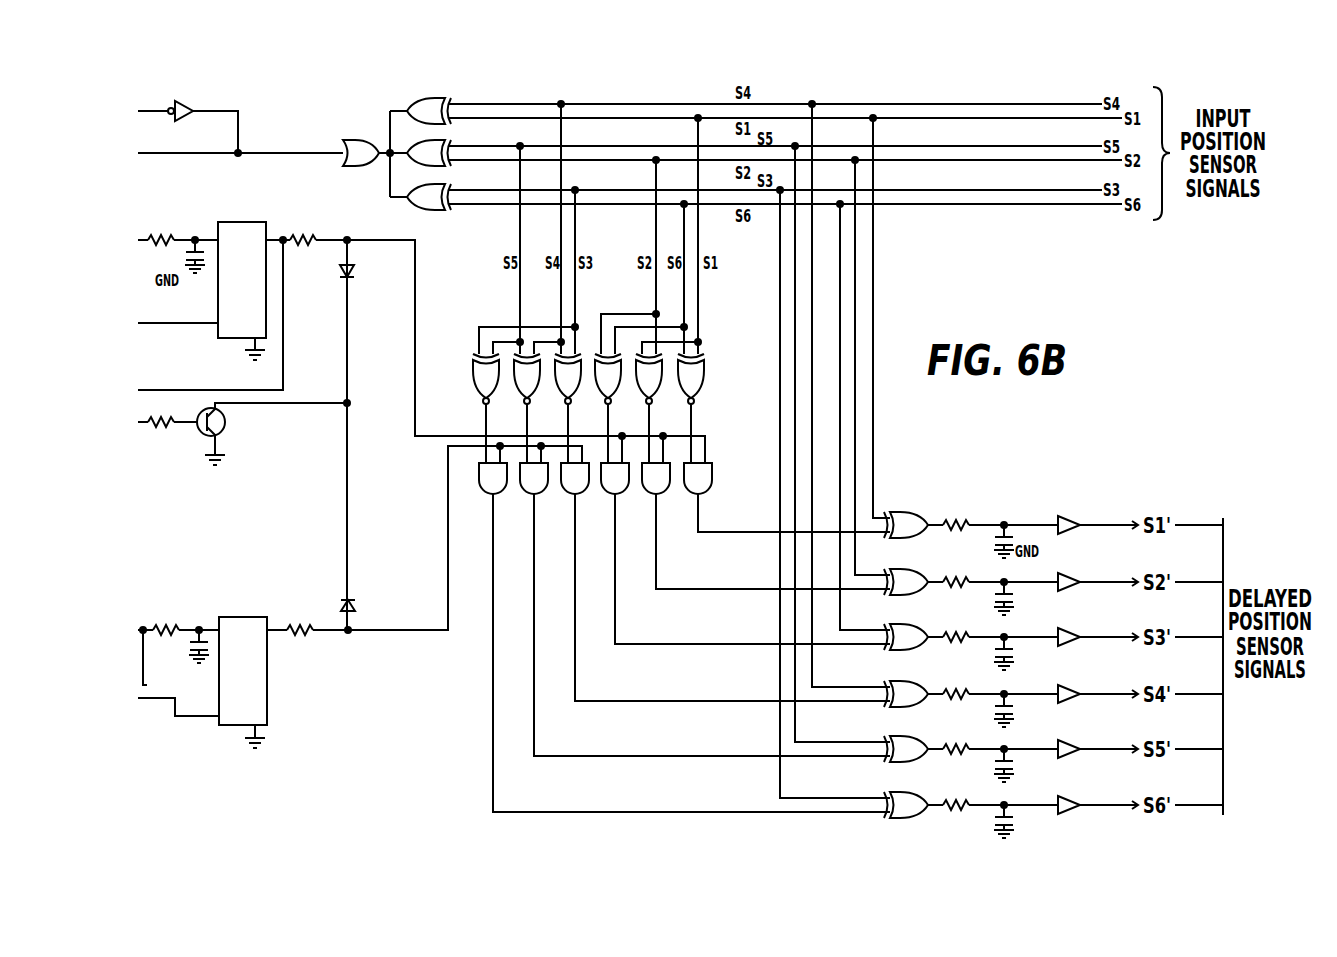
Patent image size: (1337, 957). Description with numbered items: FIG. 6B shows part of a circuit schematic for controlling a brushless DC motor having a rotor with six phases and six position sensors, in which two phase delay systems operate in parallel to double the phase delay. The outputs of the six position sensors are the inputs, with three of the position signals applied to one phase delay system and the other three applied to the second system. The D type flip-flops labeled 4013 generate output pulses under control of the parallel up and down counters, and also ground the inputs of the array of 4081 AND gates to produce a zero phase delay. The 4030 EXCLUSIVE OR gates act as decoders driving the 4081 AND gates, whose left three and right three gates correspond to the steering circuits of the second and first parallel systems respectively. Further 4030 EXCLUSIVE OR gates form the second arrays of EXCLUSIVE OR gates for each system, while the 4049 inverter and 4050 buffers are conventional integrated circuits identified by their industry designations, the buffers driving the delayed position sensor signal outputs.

The 4049 inverter 4049 is at (184, 105).
The 4030 EXCLUSIVE OR gate 4030 is at (651, 455).
The 4013 flip-flop 4013 is at (242, 464).
The 4081 AND gate 4081 is at (615, 478).
The 4050 buffer 4050 is at (1066, 655).